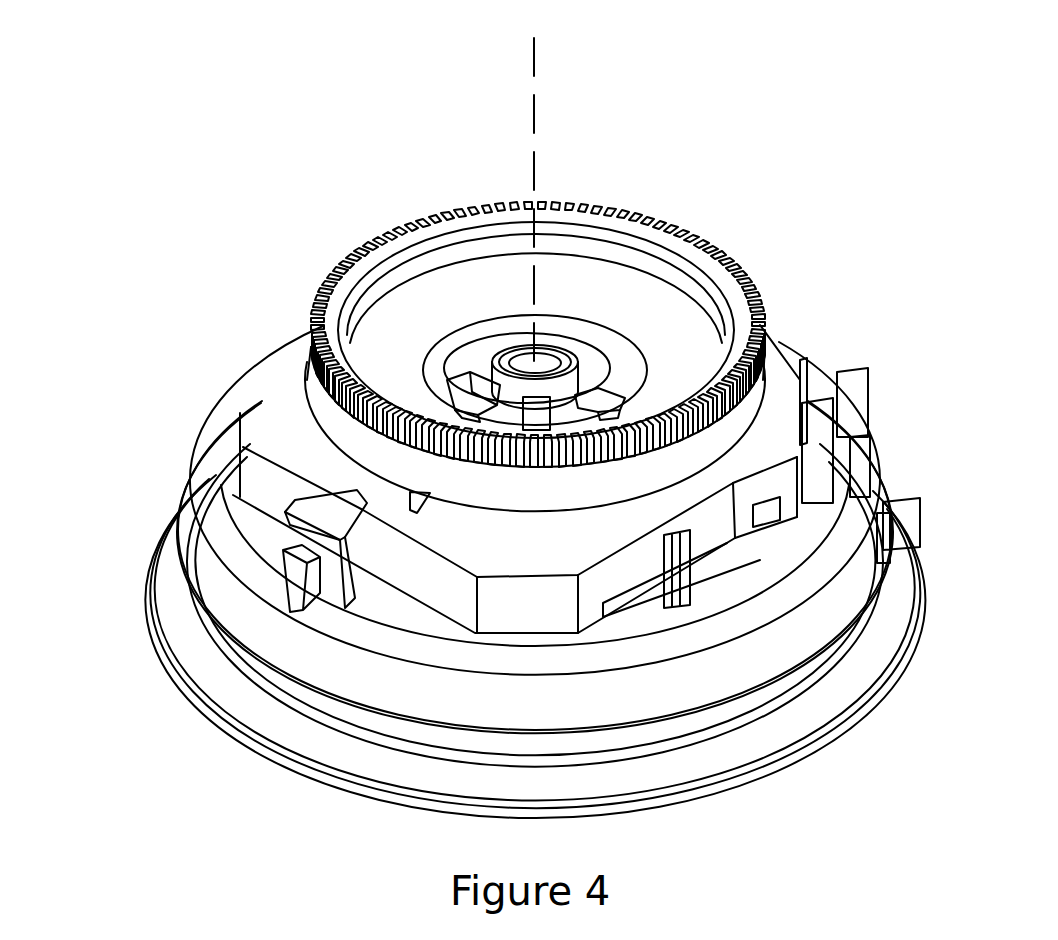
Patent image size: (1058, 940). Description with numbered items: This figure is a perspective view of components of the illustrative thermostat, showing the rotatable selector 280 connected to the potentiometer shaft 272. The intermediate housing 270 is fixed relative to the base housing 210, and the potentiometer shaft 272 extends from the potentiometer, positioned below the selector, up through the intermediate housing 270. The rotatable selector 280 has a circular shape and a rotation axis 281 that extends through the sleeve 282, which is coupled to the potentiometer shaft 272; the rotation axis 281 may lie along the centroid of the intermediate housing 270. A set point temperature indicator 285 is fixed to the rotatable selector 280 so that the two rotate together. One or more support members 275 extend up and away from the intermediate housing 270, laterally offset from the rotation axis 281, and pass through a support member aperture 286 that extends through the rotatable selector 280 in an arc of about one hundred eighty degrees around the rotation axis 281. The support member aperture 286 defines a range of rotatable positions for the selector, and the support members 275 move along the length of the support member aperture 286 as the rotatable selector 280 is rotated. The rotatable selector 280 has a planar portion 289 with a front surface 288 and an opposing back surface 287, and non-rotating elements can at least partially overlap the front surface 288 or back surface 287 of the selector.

The base housing 210 is at (750, 748).
The intermediate housing 270 is at (263, 533).
The potentiometer shaft 272 is at (603, 403).
The support members 275 is at (480, 383).
The rotatable selector 280 is at (743, 282).
The rotation axis 281 is at (535, 105).
The sleeve 282 is at (565, 348).
The set point temperature indicator 285 is at (462, 405).
The support member aperture 286 is at (497, 355).
The back surface 287 is at (487, 503).
The front surface 288 is at (670, 328).
The planar portion 289 is at (572, 287).